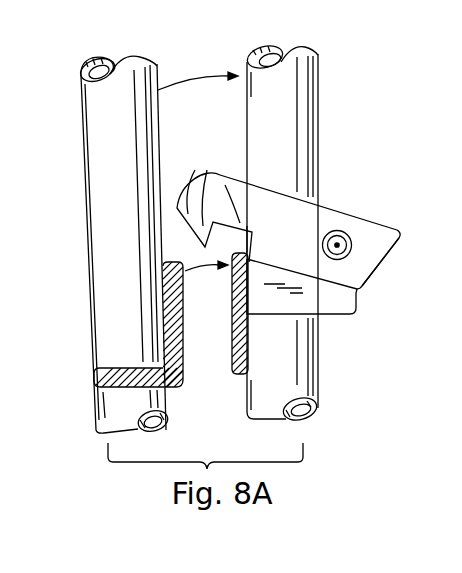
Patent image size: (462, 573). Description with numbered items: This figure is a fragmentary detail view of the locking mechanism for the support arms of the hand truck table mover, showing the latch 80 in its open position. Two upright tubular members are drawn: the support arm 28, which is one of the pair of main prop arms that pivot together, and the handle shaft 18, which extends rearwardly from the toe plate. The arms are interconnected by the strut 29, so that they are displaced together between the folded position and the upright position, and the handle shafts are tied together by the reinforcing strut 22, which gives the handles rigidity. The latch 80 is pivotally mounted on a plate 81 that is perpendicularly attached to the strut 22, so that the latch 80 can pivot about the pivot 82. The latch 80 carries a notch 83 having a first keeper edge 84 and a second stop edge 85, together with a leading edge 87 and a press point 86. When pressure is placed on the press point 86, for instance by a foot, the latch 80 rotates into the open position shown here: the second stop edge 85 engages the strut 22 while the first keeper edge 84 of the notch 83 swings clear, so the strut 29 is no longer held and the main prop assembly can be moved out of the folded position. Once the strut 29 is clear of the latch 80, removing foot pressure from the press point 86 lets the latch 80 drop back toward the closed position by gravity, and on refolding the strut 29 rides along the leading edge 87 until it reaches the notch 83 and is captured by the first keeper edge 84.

The handle shaft 18 is at (318, 118).
The reinforcing strut 22 is at (238, 377).
The support arm 28 is at (83, 209).
The strut 29 is at (118, 369).
The latch 80 is at (307, 232).
The plate 81 is at (341, 316).
The pivot 82 is at (349, 249).
The notch 83 is at (225, 185).
The first keeper edge 84 is at (207, 196).
The second stop edge 85 is at (250, 262).
The press point 86 is at (401, 231).
The leading edge 87 is at (203, 190).